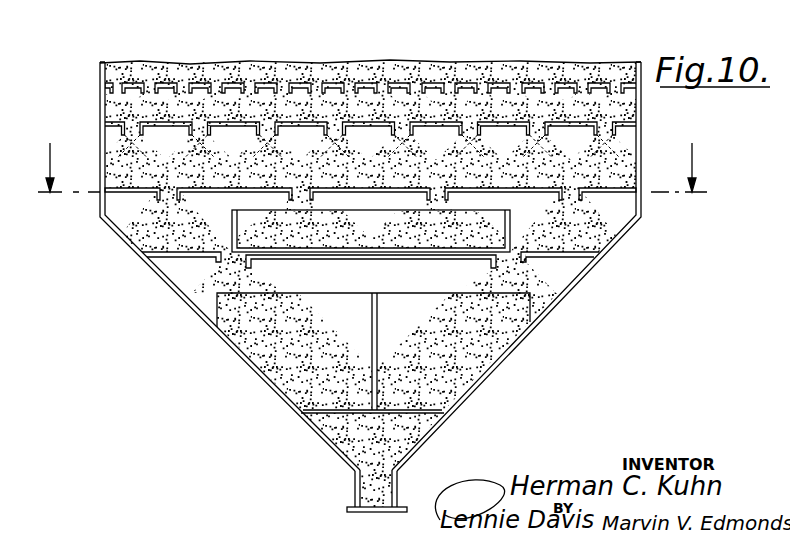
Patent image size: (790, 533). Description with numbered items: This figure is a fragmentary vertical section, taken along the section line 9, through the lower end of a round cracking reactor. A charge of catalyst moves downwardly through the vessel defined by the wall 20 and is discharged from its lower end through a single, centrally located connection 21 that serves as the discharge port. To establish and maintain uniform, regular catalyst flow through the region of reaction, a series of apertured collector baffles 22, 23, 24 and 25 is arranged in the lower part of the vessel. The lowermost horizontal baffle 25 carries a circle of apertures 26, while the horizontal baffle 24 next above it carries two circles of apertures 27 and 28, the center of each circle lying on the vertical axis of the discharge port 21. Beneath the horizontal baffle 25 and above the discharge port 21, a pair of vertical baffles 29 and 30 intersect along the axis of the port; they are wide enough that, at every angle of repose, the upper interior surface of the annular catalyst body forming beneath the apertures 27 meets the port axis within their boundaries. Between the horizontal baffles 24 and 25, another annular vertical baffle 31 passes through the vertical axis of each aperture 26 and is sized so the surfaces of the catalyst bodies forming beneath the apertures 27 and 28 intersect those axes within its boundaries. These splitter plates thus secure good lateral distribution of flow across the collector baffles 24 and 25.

The section line 9 is at (370, 167).
The wall 20 is at (643, 203).
The connection 21 is at (353, 490).
The apertured collector baffle 22 is at (132, 80).
The apertured collector baffle 23 is at (118, 123).
The horizontal baffle 24 is at (117, 192).
The lowermost horizontal baffle 25 is at (163, 262).
The apertures 26 is at (249, 266).
The apertures 27 is at (180, 195).
The apertures 28 is at (311, 196).
The vertical baffle 29 is at (376, 307).
The vertical baffle 30 is at (335, 306).
The annular vertical baffle 31 is at (512, 223).